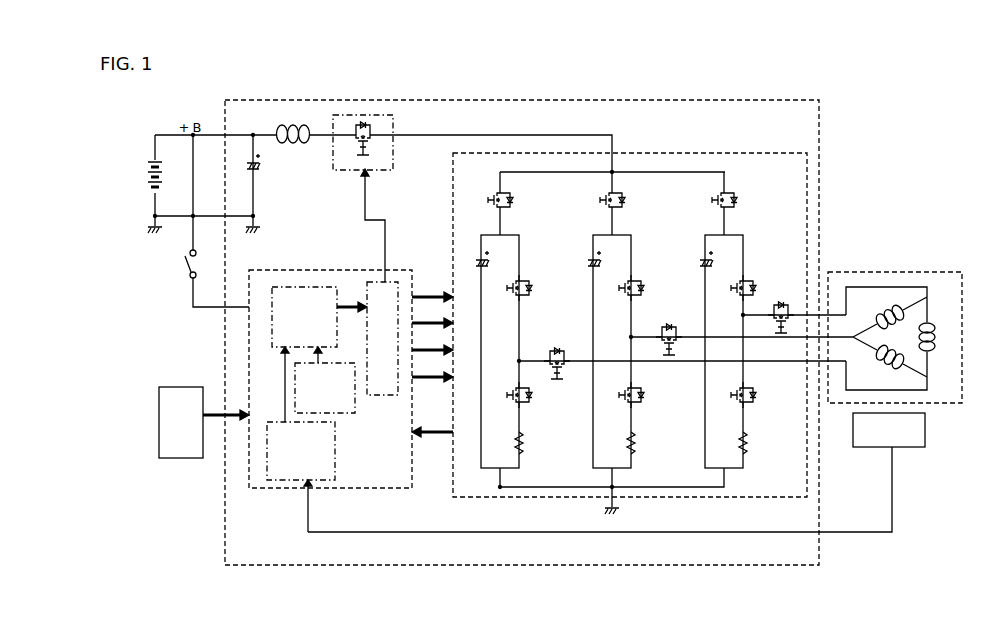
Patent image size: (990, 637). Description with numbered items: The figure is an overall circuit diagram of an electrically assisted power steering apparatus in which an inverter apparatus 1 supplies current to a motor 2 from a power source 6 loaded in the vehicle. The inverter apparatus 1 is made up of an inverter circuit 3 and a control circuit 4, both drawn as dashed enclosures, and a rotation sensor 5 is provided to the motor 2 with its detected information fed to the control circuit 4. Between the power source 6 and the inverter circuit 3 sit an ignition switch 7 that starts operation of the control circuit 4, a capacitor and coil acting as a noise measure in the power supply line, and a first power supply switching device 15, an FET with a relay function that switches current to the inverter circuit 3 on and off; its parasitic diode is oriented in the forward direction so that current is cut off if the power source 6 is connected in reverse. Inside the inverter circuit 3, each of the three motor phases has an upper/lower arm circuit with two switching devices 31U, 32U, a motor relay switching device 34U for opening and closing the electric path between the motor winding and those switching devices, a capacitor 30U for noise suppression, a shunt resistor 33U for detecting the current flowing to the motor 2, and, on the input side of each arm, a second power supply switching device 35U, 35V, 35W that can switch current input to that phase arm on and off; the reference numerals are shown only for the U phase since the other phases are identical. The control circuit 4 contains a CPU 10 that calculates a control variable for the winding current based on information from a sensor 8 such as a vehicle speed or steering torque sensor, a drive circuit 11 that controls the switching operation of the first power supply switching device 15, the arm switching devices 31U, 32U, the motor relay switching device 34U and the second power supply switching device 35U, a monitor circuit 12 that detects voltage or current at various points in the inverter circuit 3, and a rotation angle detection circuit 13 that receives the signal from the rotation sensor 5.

The inverter apparatus 1 is at (819, 195).
The motor 2 is at (912, 272).
The inverter circuit 3 is at (658, 498).
The control circuit 4 is at (249, 477).
The rotation sensor 5 is at (900, 448).
The power source 6 is at (143, 168).
The ignition switch 7 is at (182, 275).
The sensor 8 is at (159, 458).
The CPU 10 is at (270, 317).
The drive circuit 11 is at (387, 398).
The monitor circuit 12 is at (340, 415).
The rotation angle detection circuit 13 is at (272, 482).
The first power supply switching device 15 is at (392, 115).
The capacitor 30U is at (473, 252).
The switching device 31U is at (524, 276).
The switching device 32U is at (537, 403).
The shunt resistor 33U is at (525, 442).
The motor relay switching device 34U is at (557, 353).
The second power supply switching device 35U is at (510, 187).
The second power supply switching device 35V is at (622, 187).
The second power supply switching device 35W is at (735, 187).